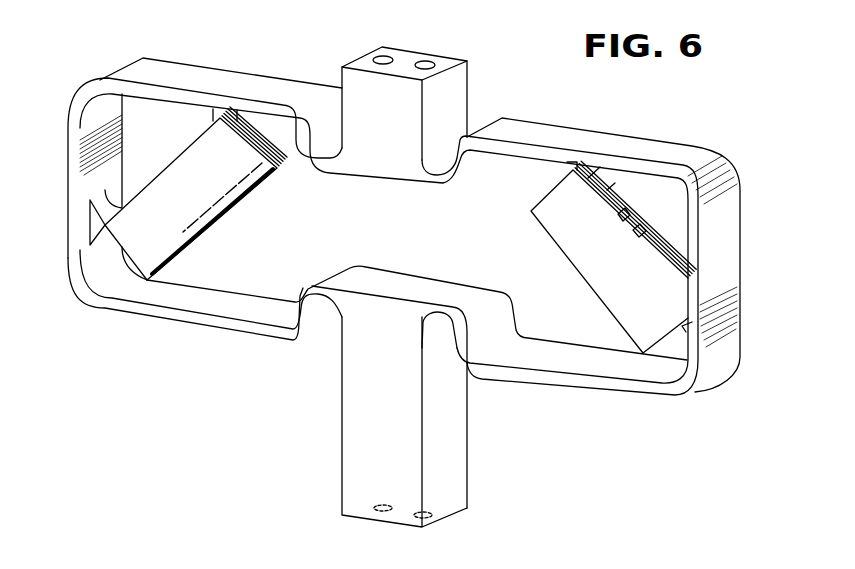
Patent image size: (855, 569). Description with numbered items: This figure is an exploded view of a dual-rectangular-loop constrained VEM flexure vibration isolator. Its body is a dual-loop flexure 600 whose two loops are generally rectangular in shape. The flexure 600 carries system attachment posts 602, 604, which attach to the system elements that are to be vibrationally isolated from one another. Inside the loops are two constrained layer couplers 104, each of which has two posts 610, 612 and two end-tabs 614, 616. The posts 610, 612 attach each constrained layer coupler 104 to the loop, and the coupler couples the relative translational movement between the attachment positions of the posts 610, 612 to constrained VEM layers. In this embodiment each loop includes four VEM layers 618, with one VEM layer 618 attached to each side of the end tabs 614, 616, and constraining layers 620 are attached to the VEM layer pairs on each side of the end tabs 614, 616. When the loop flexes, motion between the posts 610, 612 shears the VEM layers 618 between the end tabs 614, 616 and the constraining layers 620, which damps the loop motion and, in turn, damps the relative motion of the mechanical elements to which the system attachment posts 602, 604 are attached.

The dual-loop flexure 600 is at (725, 166).
The system attachment post 602 is at (468, 98).
The system attachment post 604 is at (467, 417).
The constrained layer coupler 104 is at (236, 218).
The post 610 is at (563, 167).
The post 612 is at (688, 322).
The end-tab 614 is at (605, 192).
The end-tab 616 is at (673, 282).
The VEM layer 618 is at (597, 244).
The constraining layer 620 is at (588, 178).